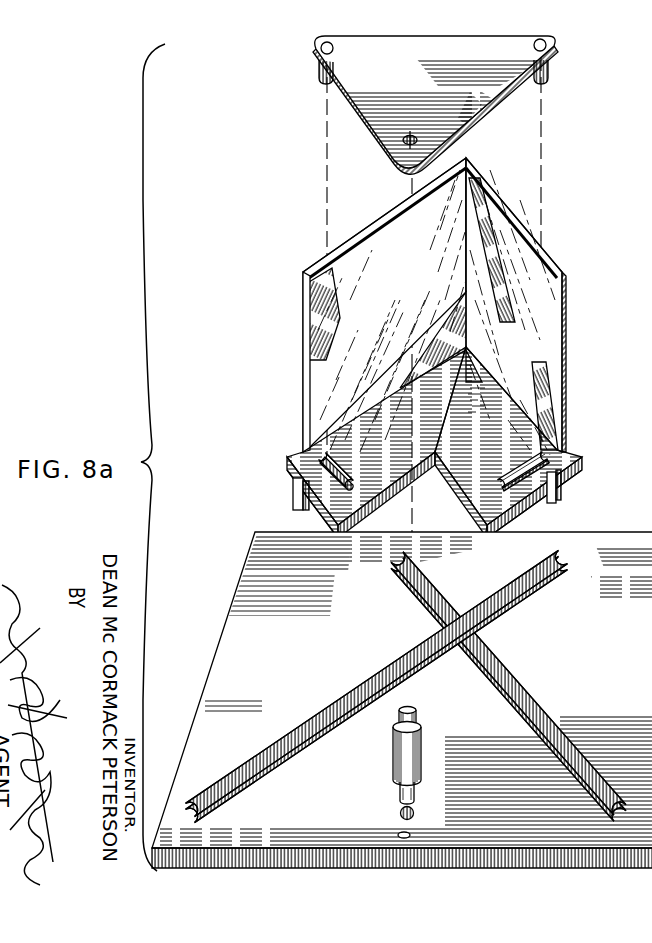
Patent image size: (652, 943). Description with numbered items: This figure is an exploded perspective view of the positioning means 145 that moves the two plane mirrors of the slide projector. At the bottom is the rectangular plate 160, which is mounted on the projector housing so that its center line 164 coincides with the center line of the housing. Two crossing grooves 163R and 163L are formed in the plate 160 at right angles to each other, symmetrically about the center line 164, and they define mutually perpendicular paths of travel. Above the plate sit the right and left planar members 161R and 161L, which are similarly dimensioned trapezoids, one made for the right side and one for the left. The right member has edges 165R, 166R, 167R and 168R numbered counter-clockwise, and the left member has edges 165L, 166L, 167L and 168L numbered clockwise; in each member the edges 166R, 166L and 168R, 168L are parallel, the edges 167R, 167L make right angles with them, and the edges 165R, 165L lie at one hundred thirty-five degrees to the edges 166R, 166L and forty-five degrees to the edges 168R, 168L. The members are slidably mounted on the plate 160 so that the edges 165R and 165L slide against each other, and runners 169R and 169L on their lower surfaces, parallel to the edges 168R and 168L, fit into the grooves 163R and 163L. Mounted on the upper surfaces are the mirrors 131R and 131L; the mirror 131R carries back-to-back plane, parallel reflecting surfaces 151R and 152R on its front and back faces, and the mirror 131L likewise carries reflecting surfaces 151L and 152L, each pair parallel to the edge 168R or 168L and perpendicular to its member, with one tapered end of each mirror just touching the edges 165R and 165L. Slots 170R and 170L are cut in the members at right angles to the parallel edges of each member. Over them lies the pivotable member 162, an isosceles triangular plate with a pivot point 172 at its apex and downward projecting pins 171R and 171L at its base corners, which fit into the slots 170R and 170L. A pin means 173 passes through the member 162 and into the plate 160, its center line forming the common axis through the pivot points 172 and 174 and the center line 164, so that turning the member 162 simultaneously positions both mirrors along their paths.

The rectangular plate 160 is at (278, 582).
The pivotable member 162 is at (484, 97).
The downward projecting pin 171L is at (319, 79).
The downward projecting pin 171R is at (550, 78).
The pivot point 172 is at (410, 134).
The plane mirror 131L is at (373, 227).
The plane mirror 131R is at (523, 228).
The reflecting surface 152L is at (355, 297).
The reflecting surface 152R is at (525, 303).
The reflecting surface 151L is at (303, 359).
The reflecting surface 151R is at (568, 359).
The edge of planar member 165L is at (447, 388).
The edge of planar member 165R is at (474, 392).
The edge of planar member 168L is at (298, 452).
The edge of planar member 168R is at (575, 447).
The planar member 161L is at (285, 455).
The planar member 161R is at (578, 456).
The slot 170L is at (318, 474).
The slot 170R is at (560, 470).
The runner 169L is at (293, 493).
The runner 169R is at (562, 489).
The edge of planar member 167L is at (327, 509).
The edge of planar member 167R is at (520, 513).
The edge of planar member 166L is at (392, 486).
The edge of planar member 166R is at (472, 502).
The positioning means 145 is at (392, 517).
The groove 163L is at (528, 590).
The groove 163R is at (455, 558).
The pin means 173 is at (393, 754).
The pivot point 174 is at (403, 808).
The center line 164 is at (401, 832).